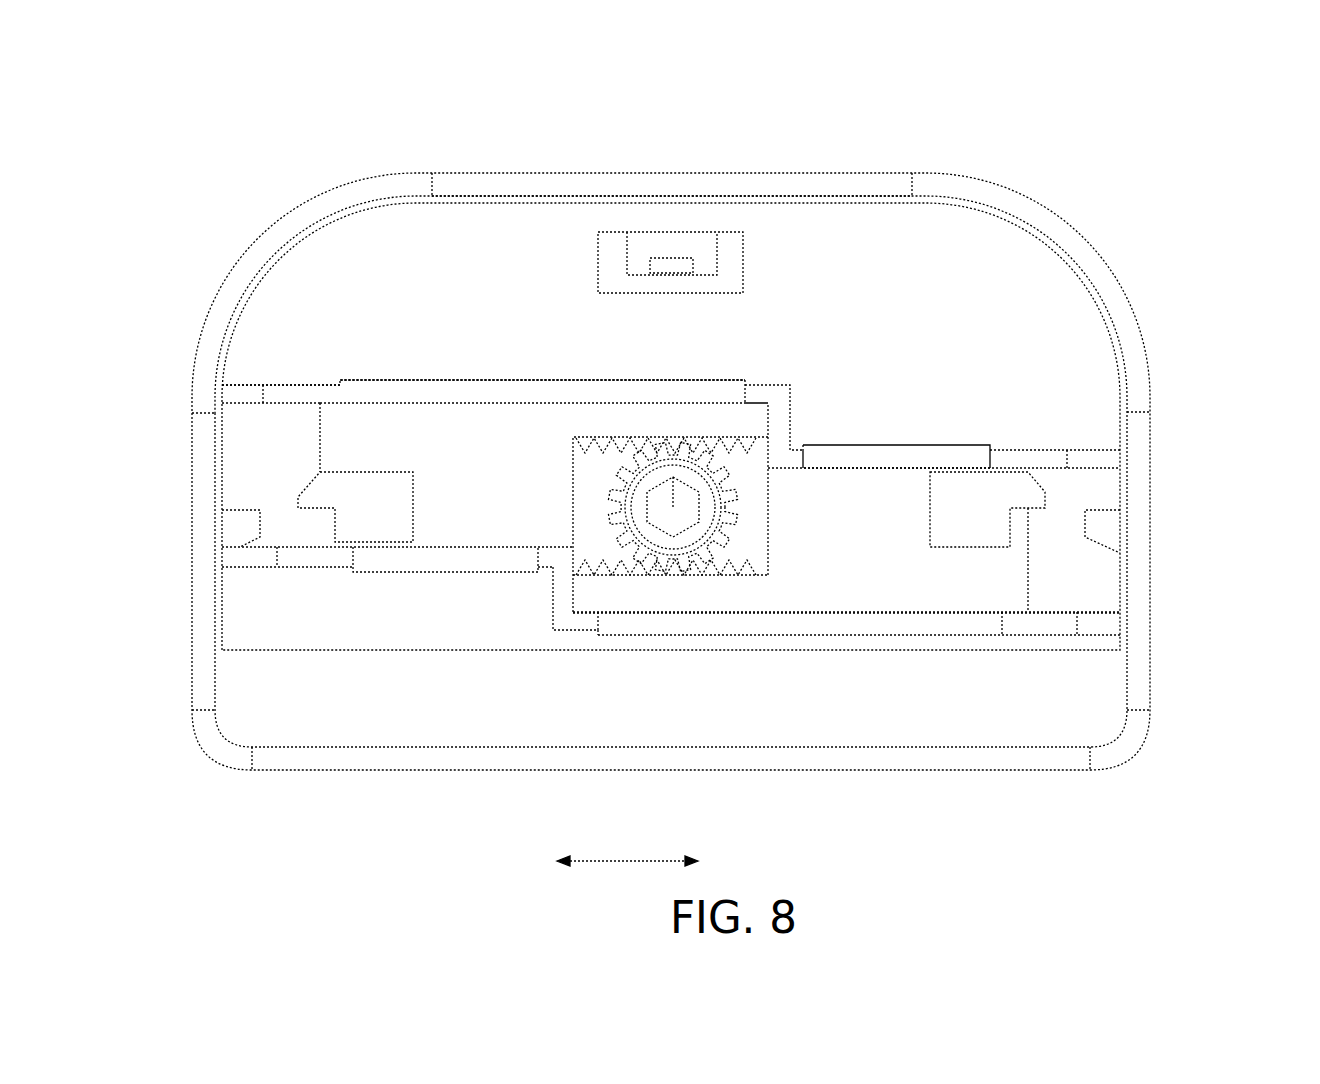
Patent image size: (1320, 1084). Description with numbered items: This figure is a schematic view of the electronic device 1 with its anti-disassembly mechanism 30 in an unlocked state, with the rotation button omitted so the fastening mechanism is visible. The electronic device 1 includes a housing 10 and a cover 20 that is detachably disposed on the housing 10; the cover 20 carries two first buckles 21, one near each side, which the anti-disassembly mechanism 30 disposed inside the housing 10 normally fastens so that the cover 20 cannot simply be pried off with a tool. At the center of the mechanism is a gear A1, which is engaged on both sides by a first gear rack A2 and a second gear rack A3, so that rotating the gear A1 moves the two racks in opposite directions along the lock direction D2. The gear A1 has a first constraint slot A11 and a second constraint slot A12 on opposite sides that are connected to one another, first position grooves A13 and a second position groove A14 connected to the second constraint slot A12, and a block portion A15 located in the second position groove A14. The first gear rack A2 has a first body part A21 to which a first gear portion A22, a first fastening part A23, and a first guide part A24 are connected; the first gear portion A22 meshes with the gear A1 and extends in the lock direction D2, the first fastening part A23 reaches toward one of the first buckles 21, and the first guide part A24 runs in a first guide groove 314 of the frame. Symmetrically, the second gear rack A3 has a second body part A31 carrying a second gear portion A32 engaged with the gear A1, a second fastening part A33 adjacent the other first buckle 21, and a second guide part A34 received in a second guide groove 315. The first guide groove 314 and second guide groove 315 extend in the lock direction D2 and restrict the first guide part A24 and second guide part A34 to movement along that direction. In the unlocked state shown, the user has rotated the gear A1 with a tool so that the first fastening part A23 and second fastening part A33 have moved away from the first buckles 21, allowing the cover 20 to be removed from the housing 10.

The electronic device 1 is at (1262, 93).
The housing 10 is at (1155, 367).
The cover 20 is at (727, 183).
The first buckles 21 is at (242, 523).
The anti-disassembly mechanism 30 is at (848, 268).
The first guide groove 314 is at (317, 393).
The second guide groove 315 is at (1037, 453).
The gear A1 is at (737, 481).
The first constraint slot A11 is at (640, 527).
The second constraint slot A12 is at (673, 507).
The first position grooves A13 is at (648, 505).
The second position groove A14 is at (680, 533).
The block portion A15 is at (668, 533).
The first gear rack A2 is at (308, 430).
The first body part A21 is at (463, 472).
The first gear portion A22 is at (643, 423).
The first fastening part A23 is at (367, 530).
The first guide part A24 is at (397, 390).
The second gear rack A3 is at (1045, 582).
The second body part A31 is at (890, 557).
The second gear portion A32 is at (728, 602).
The second fastening part A33 is at (990, 527).
The second guide part A34 is at (880, 453).
The lock direction D2 is at (655, 858).